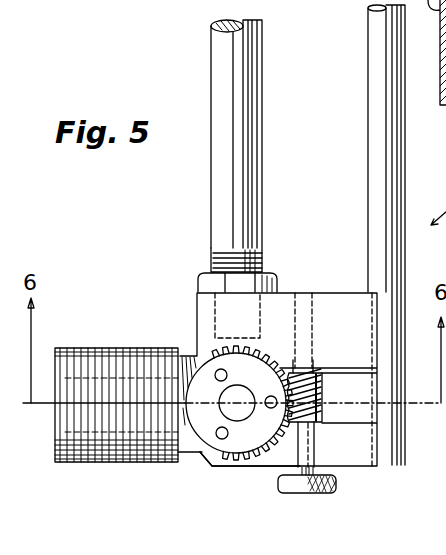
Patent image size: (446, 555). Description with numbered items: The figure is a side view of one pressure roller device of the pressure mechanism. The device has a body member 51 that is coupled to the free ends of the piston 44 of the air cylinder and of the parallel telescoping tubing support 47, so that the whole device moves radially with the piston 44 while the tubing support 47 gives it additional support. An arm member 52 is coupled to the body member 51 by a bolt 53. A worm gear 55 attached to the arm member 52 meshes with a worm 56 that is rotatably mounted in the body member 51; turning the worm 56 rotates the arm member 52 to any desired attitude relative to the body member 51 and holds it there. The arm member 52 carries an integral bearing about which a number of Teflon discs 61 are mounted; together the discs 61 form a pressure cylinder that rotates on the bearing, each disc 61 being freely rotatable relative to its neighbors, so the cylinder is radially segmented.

The piston 44 is at (262, 146).
The tubing support 47 is at (368, 192).
The body member 51 is at (352, 292).
The arm member 52 is at (190, 350).
The bolt 53 is at (216, 426).
The worm gear 55 is at (258, 467).
The worm 56 is at (323, 369).
The Teflon discs 61 is at (112, 348).